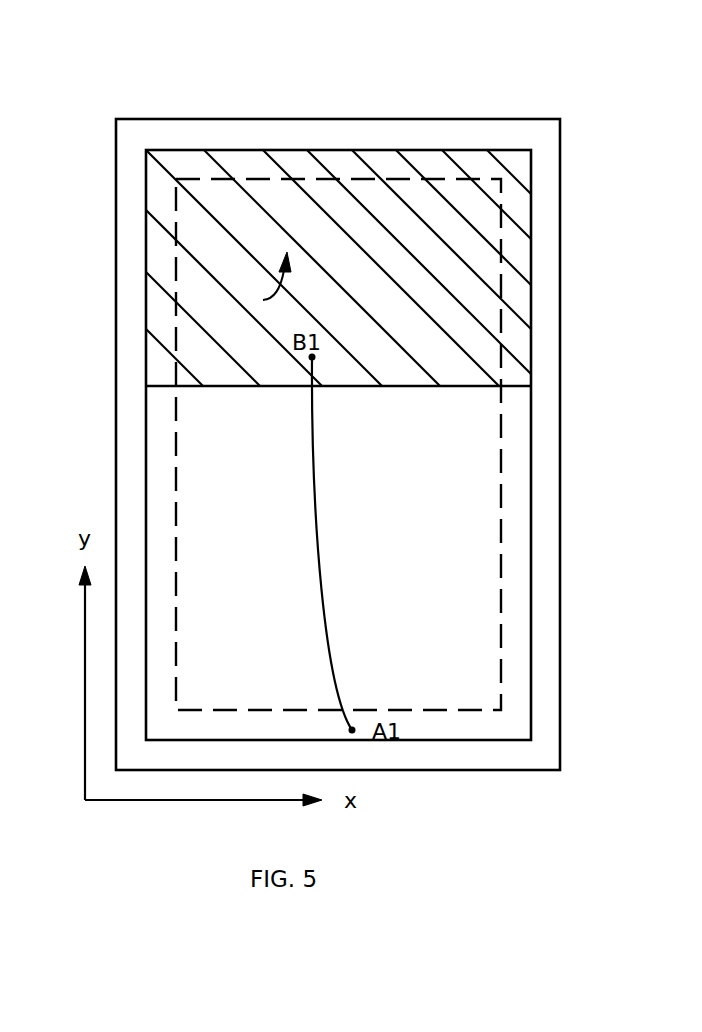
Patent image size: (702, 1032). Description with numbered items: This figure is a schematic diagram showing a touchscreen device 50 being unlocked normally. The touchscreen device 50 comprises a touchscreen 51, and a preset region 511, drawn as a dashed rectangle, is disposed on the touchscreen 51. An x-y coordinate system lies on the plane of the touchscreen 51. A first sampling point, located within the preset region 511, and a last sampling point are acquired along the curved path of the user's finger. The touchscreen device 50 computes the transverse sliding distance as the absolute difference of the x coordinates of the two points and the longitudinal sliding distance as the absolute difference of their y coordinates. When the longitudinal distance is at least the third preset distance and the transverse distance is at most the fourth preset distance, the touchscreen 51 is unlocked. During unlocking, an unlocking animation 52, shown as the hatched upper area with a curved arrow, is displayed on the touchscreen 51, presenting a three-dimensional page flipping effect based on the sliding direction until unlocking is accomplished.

The touchscreen device 50 is at (332, 34).
The touchscreen 51 is at (145, 197).
The unlocking animation 52 is at (172, 301).
The preset region 511 is at (160, 465).